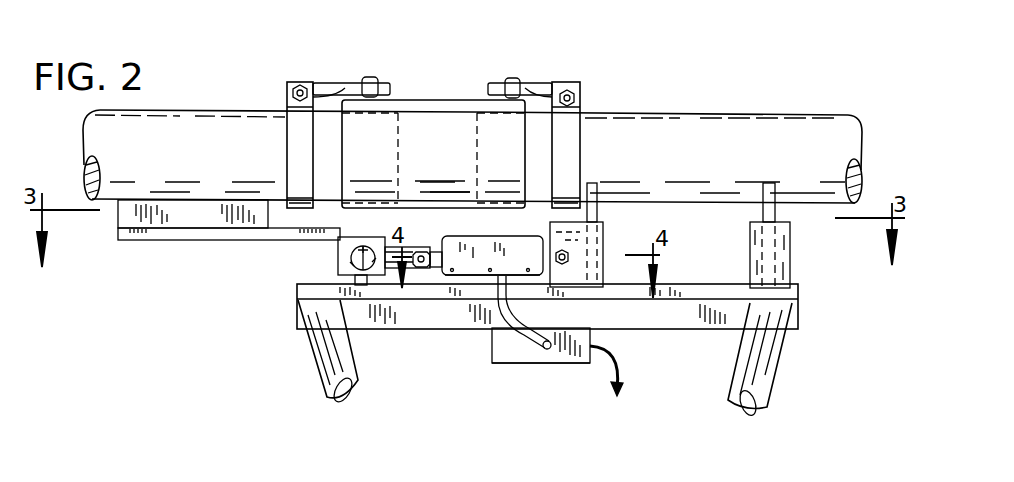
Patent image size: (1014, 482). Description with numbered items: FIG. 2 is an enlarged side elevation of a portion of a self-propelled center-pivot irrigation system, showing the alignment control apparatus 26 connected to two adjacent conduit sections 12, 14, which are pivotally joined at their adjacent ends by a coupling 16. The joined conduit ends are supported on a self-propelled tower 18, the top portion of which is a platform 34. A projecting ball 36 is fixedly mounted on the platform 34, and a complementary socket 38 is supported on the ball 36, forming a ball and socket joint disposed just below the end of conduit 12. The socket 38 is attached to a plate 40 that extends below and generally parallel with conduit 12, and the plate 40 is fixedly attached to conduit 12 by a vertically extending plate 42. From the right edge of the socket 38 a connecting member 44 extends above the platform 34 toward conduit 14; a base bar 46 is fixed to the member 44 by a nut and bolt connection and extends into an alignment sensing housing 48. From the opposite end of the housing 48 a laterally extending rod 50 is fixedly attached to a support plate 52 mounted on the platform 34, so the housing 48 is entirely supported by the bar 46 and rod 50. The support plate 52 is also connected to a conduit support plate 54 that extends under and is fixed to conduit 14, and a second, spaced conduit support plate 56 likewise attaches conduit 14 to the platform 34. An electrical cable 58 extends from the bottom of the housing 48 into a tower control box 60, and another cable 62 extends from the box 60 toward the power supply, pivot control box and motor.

The conduit section 12 is at (178, 122).
The conduit section 14 is at (673, 128).
The coupling 16 is at (448, 88).
The tower 18 is at (782, 381).
The alignment control apparatus 26 is at (578, 376).
The platform 34 is at (302, 290).
The projecting ball 36 is at (338, 251).
The socket 38 is at (340, 248).
The plate 40 is at (167, 240).
The vertically extending plate 42 is at (125, 213).
The connecting member 44 is at (412, 288).
The base bar 46 is at (437, 270).
The alignment sensing housing 48 is at (484, 284).
The laterally extending rod 50 is at (553, 255).
The support plate 52 is at (603, 263).
The conduit support plate 54 is at (600, 212).
The conduit support plate 56 is at (775, 212).
The electrical cable 58 is at (518, 322).
The tower control box 60 is at (533, 356).
The cable 62 is at (624, 342).